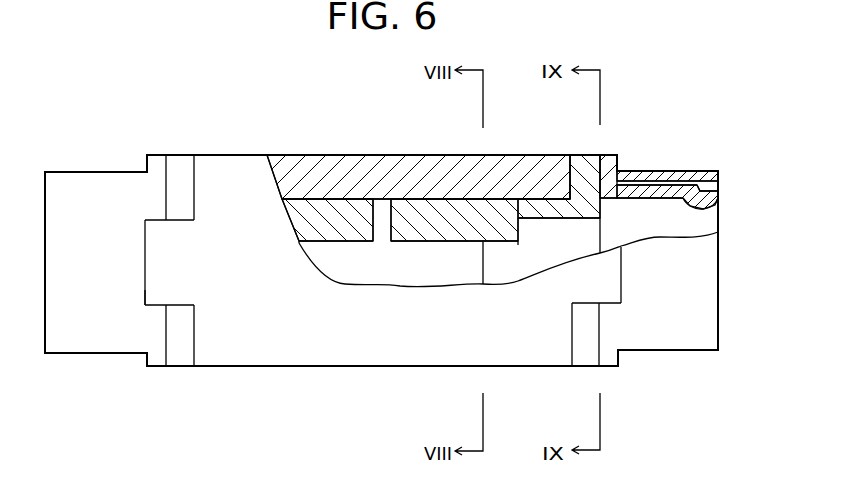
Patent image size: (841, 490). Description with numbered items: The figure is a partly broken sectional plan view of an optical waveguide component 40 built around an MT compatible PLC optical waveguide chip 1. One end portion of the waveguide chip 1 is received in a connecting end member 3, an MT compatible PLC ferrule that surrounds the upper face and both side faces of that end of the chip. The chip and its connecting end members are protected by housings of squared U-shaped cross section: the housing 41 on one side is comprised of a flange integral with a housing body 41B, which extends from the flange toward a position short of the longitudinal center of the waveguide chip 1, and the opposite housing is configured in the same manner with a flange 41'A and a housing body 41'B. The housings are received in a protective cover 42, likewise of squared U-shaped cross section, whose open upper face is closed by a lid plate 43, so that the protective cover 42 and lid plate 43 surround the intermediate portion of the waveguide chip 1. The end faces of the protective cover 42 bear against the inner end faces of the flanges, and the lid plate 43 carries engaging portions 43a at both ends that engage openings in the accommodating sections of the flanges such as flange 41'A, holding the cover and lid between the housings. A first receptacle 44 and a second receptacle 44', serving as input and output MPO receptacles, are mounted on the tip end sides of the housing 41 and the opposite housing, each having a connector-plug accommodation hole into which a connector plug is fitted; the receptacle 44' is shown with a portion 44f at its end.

The optical waveguide component 40 is at (616, 125).
The first receptacle 44 is at (96, 234).
The housing 41 is at (170, 294).
The lid plate 43 is at (343, 355).
The engaging portions 43a is at (148, 290).
The flange 41'A is at (584, 362).
The protective cover 42 is at (375, 160).
The housing body 41B is at (303, 206).
The housing body 41'B is at (454, 178).
The optical waveguide chip 1 is at (350, 253).
The second connecting end member 3 is at (541, 238).
The second receptacle 44' is at (659, 157).
The lip portion 44f is at (707, 210).